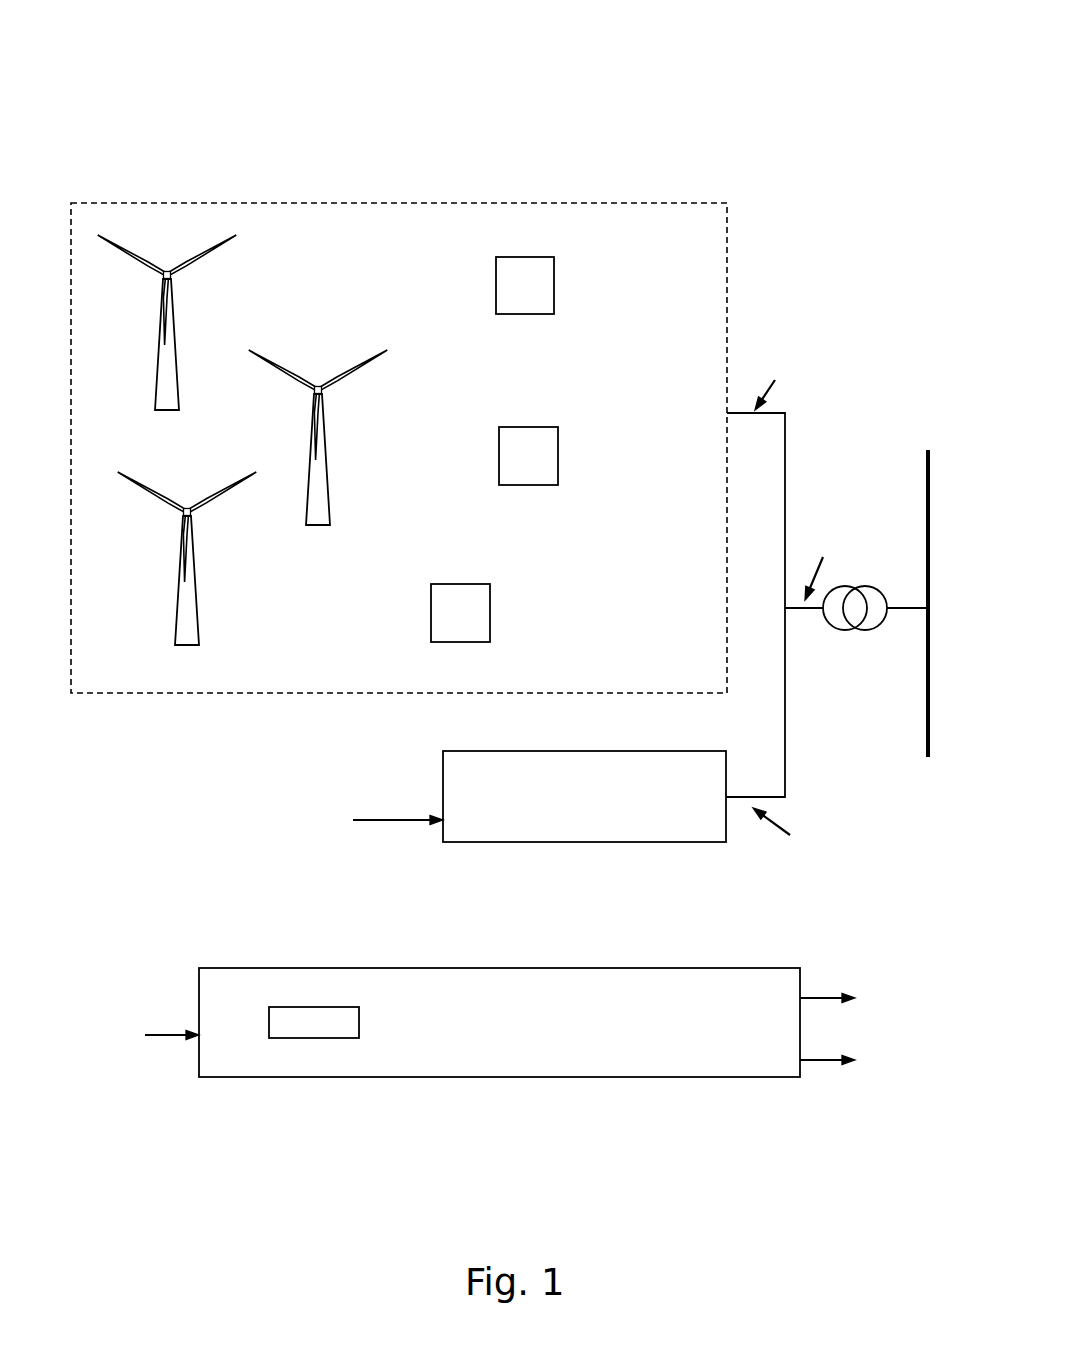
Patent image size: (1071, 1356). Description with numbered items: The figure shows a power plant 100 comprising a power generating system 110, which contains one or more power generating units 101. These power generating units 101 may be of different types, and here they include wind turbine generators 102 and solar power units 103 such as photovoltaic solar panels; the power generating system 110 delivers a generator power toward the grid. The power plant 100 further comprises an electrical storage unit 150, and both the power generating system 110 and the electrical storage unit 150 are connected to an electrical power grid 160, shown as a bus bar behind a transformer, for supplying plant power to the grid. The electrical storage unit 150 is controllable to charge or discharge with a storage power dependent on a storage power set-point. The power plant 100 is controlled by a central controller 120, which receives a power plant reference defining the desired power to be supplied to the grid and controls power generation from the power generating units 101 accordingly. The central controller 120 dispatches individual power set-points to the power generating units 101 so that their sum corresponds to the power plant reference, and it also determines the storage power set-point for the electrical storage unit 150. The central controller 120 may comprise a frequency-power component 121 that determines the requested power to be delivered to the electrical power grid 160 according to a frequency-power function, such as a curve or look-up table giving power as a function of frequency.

The power plant 100 is at (184, 64).
The power generating system 110 is at (402, 195).
The power generating unit 101 is at (188, 305).
The wind turbine generator 102 is at (327, 455).
The solar power unit 103 is at (558, 452).
The electrical storage unit 150 is at (435, 763).
The electrical power grid 160 is at (920, 475).
The central controller 120 is at (312, 967).
The frequency-power component 121 is at (363, 1024).